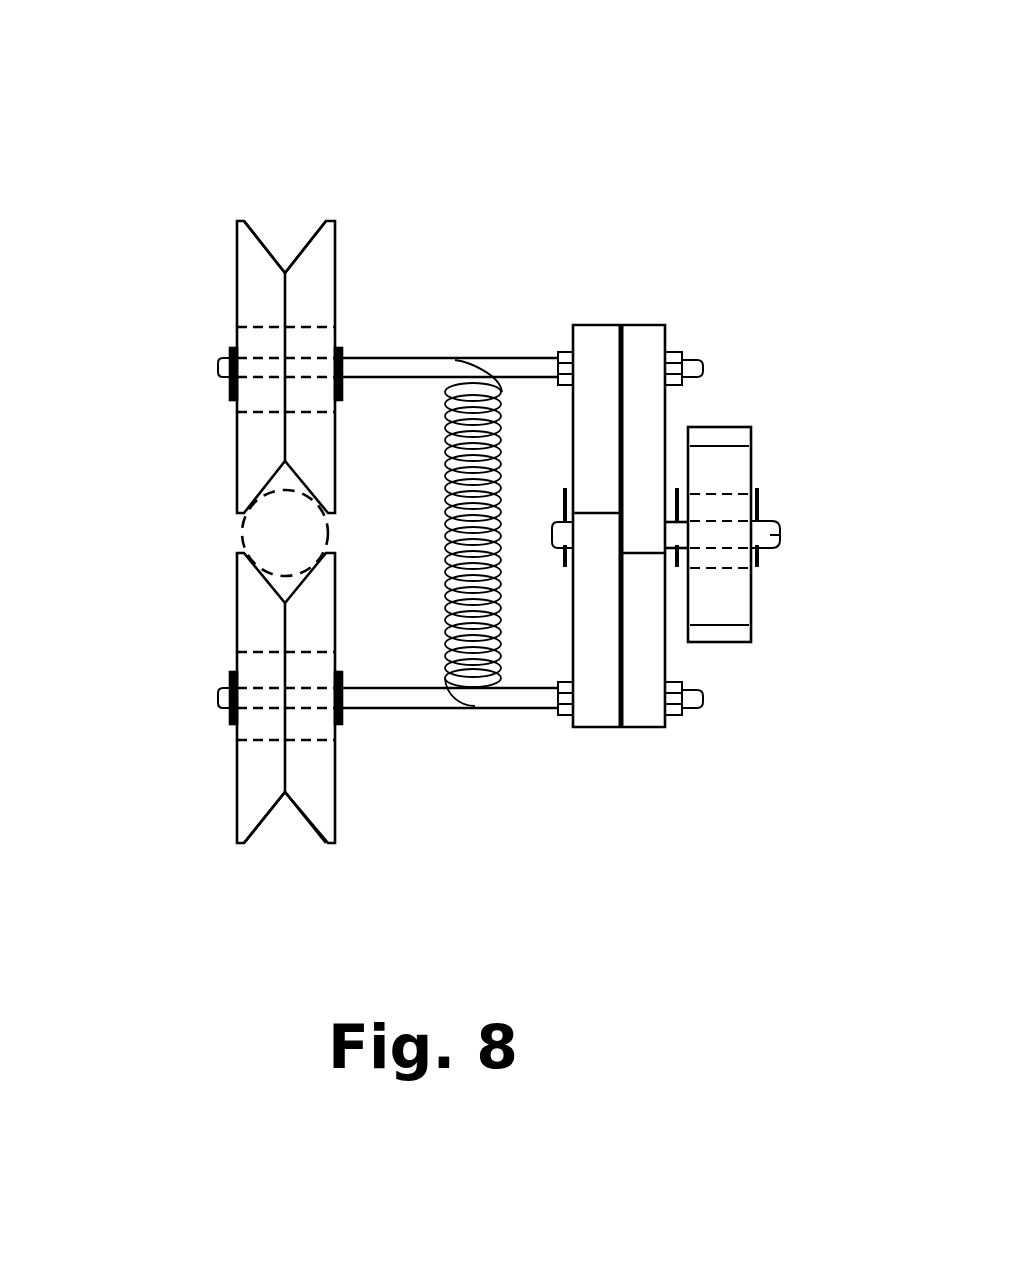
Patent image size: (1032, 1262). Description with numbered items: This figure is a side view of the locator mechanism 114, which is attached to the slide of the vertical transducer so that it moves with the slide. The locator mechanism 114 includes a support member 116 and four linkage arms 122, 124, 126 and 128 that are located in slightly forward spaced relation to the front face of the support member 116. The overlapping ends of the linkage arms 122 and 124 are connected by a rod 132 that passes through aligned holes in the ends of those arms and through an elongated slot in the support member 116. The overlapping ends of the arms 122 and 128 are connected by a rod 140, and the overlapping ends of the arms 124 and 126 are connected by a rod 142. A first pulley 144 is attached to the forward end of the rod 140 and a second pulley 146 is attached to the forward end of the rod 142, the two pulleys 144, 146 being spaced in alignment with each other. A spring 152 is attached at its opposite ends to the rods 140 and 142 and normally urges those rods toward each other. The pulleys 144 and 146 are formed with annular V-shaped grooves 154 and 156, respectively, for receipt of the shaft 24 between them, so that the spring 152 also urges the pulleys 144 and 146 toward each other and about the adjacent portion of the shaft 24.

The shaft 24 is at (226, 535).
The locator mechanism 114 is at (676, 112).
The support member 116 is at (685, 470).
The linkage arm 122 is at (641, 325).
The linkage arm 124 is at (595, 713).
The linkage arm 126 is at (655, 660).
The linkage arm 128 is at (593, 325).
The rod 132 is at (770, 535).
The rod 140 is at (410, 368).
The rod 142 is at (385, 698).
The first pulley 144 is at (248, 287).
The second pulley 146 is at (238, 765).
The spring 152 is at (452, 540).
The annular V-shaped groove 154 is at (258, 237).
The annular V-shaped groove 156 is at (265, 838).